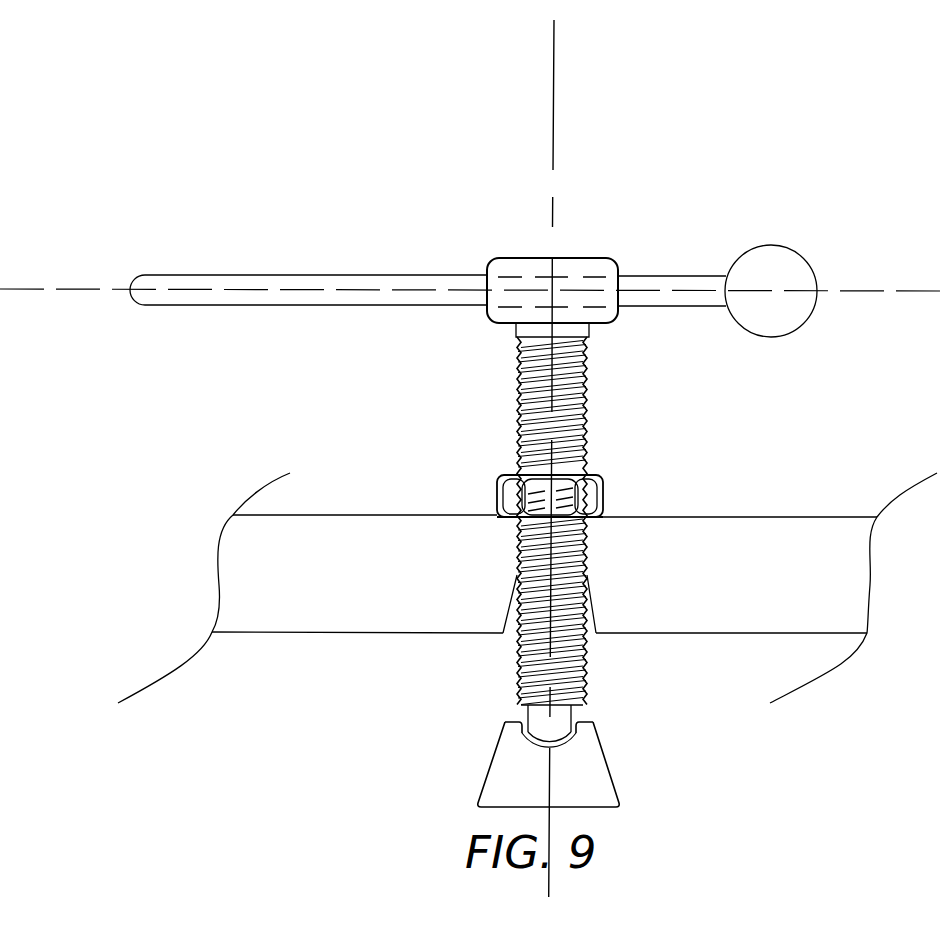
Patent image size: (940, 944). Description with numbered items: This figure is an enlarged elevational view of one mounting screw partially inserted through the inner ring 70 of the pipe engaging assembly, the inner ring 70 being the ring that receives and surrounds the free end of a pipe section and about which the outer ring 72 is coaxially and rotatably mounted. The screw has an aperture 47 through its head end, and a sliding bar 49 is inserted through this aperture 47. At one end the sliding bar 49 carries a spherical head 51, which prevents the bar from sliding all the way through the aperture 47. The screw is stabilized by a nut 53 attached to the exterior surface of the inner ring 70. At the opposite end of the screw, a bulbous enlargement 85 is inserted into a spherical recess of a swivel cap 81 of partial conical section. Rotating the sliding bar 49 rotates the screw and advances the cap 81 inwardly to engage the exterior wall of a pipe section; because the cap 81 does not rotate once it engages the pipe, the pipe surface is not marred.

The aperture 47 is at (568, 277).
The sliding bar 49 is at (320, 290).
The spherical head 51 is at (772, 268).
The nut 53 is at (604, 500).
The inner ring 70 is at (320, 568).
The outer ring 72 is at (586, 688).
The swivel cap 81 is at (580, 787).
The bulbous enlargement 85 is at (543, 755).